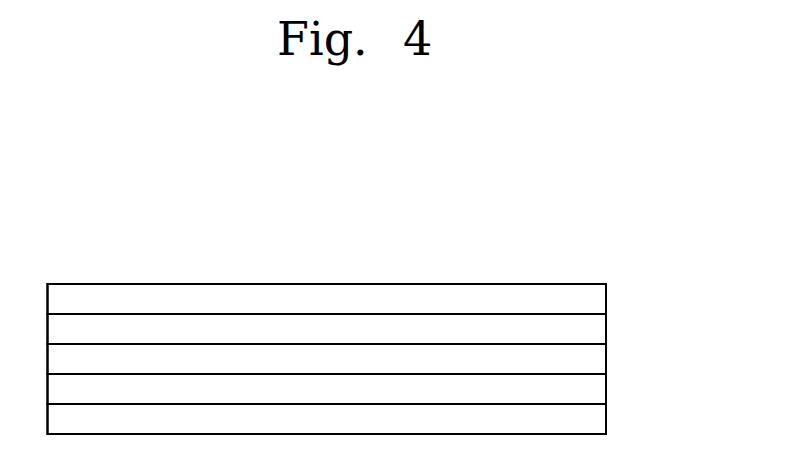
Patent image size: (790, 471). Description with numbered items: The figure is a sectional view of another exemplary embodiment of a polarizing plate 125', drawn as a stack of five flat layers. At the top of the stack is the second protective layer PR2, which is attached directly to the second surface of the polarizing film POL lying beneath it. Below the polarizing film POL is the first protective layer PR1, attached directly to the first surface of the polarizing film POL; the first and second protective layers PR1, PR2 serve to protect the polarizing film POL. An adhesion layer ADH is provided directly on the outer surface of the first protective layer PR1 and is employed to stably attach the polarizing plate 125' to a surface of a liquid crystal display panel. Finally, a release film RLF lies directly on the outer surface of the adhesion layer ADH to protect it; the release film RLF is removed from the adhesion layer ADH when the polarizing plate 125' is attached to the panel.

The polarizing plate 125' is at (333, 310).
The second protective layer PR2 is at (592, 300).
The polarizing film POL is at (592, 330).
The first protective layer PR1 is at (592, 360).
The adhesion layer ADH is at (592, 390).
The release film RLF is at (592, 420).